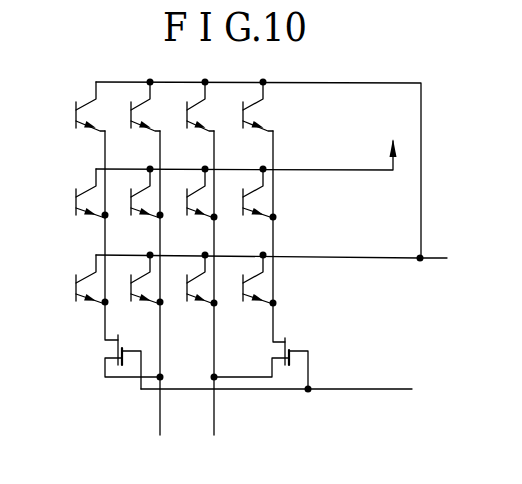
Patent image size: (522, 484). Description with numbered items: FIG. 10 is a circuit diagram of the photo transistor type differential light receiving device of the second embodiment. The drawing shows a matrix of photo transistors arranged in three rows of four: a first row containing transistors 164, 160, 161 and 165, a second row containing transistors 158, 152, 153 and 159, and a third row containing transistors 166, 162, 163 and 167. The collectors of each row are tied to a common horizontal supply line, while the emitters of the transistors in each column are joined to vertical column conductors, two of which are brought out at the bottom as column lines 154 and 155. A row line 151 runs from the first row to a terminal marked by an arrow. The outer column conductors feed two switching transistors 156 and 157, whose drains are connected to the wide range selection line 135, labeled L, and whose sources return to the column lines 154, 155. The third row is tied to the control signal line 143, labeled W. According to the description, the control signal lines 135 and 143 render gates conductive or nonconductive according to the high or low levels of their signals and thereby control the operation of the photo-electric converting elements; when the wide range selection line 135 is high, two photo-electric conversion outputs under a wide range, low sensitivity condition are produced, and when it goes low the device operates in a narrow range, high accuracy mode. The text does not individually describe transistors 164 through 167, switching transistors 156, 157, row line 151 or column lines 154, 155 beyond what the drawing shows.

The transistor 164 is at (76, 115).
The transistor 160 is at (131, 115).
The transistor 161 is at (187, 115).
The transistor 165 is at (243, 115).
The transistor 158 is at (76, 202).
The transistor 152 is at (131, 202).
The transistor 153 is at (187, 202).
The transistor 159 is at (243, 202).
The transistor 166 is at (76, 288).
The transistor 162 is at (131, 290).
The transistor 163 is at (187, 290).
The transistor 167 is at (243, 289).
The MOS transistor 156 is at (117, 347).
The MOS transistor 157 is at (289, 346).
The row line 151 is at (334, 169).
The control signal line 143 is at (430, 258).
The wide range selection line 135 is at (366, 389).
The column line 154 is at (160, 299).
The column line 155 is at (215, 299).